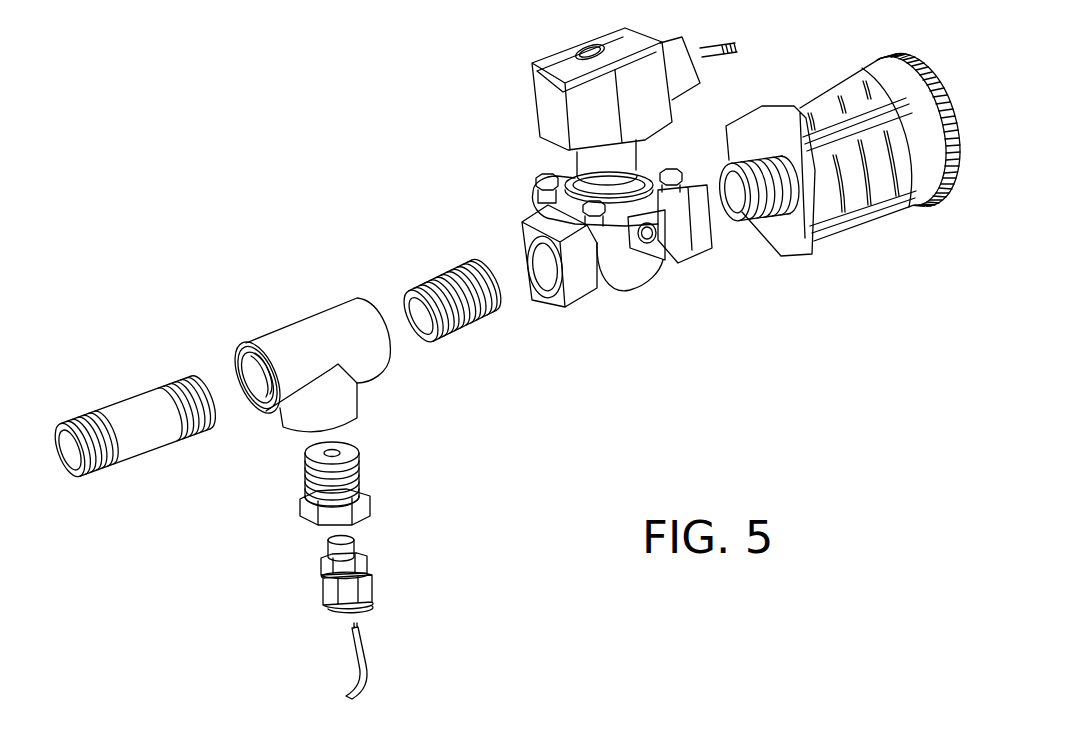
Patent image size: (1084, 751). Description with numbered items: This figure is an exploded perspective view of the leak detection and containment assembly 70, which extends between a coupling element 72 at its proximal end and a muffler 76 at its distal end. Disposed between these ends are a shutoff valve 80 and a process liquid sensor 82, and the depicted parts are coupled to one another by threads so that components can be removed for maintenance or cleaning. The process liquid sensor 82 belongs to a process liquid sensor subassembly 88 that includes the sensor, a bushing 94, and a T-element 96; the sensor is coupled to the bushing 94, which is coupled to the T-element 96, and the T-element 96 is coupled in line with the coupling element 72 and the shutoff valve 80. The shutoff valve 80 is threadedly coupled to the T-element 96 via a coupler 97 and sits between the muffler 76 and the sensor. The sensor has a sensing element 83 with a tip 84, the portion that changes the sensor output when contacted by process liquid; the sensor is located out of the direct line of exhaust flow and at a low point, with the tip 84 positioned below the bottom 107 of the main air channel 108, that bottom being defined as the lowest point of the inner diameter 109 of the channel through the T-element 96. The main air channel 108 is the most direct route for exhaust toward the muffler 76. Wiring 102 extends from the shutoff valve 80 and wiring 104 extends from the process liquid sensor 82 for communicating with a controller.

The leak detection and containment assembly 70 is at (406, 121).
The coupling element 72 is at (130, 395).
The muffler 76 is at (873, 217).
The shutoff valve 80 is at (629, 298).
The process liquid sensor 82 is at (378, 582).
The sensing element 83 is at (330, 540).
The tip 84 is at (358, 540).
The process liquid sensor subassembly 88 is at (338, 282).
The bushing 94 is at (368, 487).
The T-element 96 is at (315, 308).
The coupler 97 is at (463, 267).
The wiring 102 is at (727, 70).
The wiring 104 is at (367, 663).
The bottom of the main air channel 107 is at (257, 358).
The main air channel 108 is at (254, 407).
The inner diameter 109 is at (247, 373).